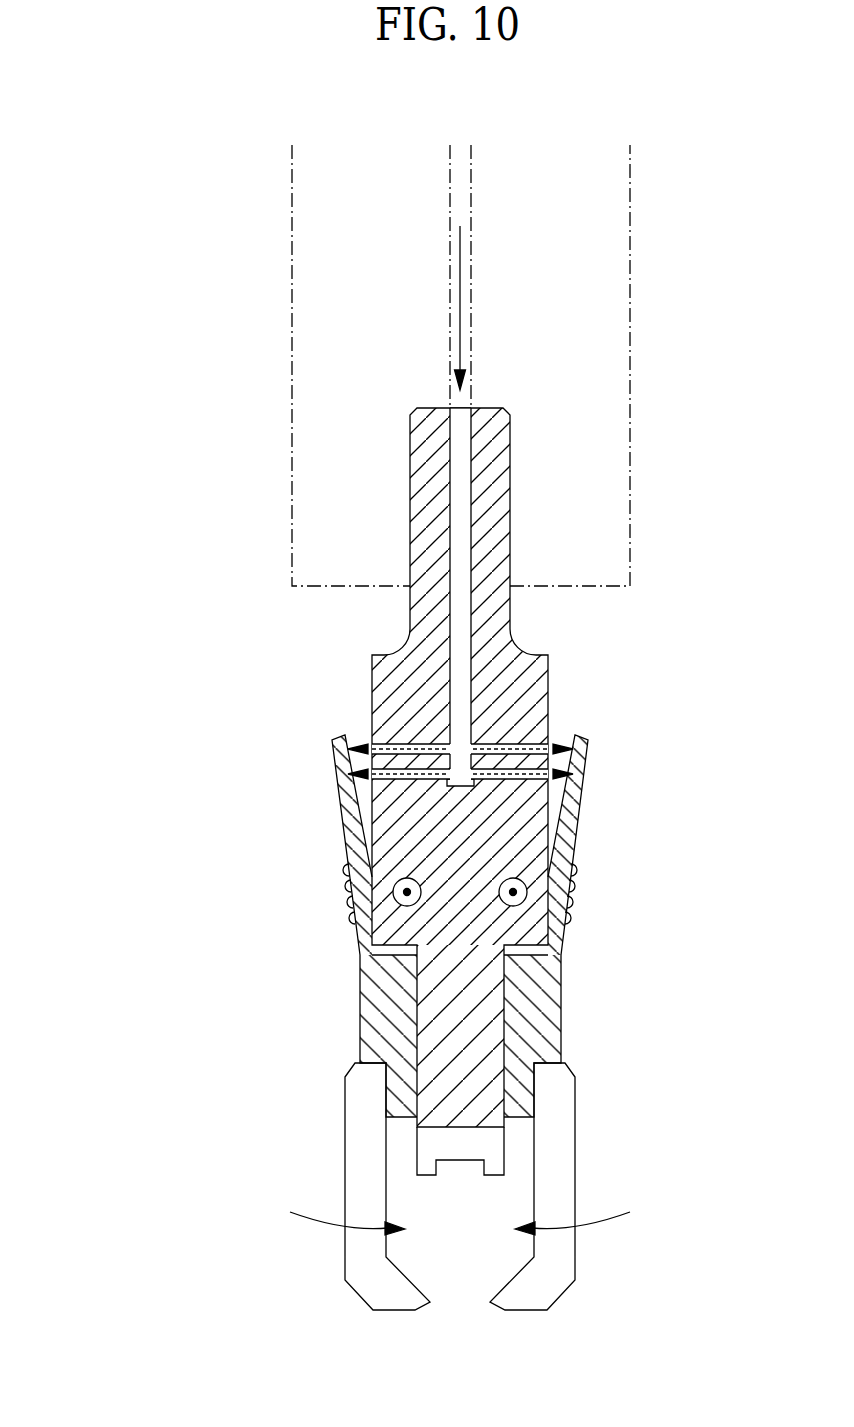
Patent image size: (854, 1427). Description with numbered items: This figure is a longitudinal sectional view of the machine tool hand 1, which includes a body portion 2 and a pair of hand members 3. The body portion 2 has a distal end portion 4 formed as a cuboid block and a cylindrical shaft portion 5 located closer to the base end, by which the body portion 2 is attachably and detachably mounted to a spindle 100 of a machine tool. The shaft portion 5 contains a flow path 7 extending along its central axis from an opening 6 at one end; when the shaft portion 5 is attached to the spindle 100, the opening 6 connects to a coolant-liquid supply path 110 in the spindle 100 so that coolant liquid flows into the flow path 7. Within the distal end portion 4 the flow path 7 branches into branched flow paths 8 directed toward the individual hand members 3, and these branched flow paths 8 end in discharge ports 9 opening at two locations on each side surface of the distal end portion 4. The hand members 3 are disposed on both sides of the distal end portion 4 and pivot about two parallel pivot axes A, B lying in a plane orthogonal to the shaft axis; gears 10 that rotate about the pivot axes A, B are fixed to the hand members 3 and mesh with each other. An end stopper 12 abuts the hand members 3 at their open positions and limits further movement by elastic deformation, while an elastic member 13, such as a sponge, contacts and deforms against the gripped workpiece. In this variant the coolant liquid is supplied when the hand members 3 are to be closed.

The machine tool hand 1 is at (172, 692).
The body portion 2 is at (330, 737).
The hand members 3 is at (575, 1148).
The distal end portion 4 is at (545, 1007).
The shaft portion 5 is at (410, 470).
The opening 6 is at (462, 408).
The flow path 7 is at (462, 517).
The branched flow paths 8 is at (483, 780).
The discharge ports 9 is at (558, 767).
The gears 10 is at (570, 897).
The end stopper 12 is at (550, 688).
The elastic member 13 is at (490, 1178).
The spindle 100 is at (292, 288).
The coolant-liquid supply path 110 is at (452, 203).
The pivot axis A is at (407, 892).
The pivot axis B is at (513, 892).